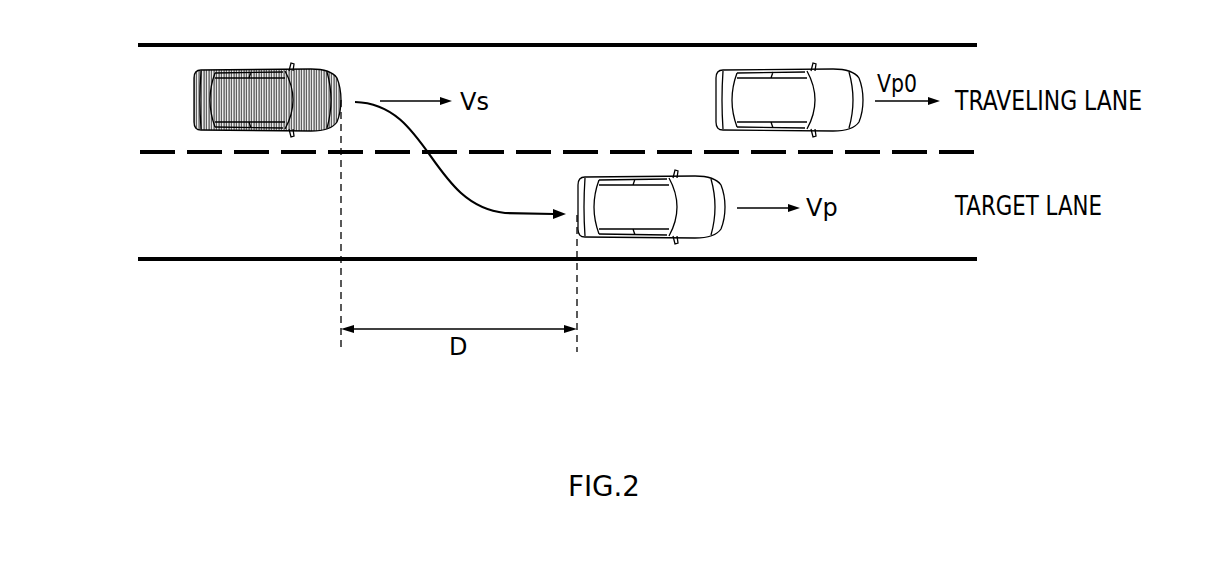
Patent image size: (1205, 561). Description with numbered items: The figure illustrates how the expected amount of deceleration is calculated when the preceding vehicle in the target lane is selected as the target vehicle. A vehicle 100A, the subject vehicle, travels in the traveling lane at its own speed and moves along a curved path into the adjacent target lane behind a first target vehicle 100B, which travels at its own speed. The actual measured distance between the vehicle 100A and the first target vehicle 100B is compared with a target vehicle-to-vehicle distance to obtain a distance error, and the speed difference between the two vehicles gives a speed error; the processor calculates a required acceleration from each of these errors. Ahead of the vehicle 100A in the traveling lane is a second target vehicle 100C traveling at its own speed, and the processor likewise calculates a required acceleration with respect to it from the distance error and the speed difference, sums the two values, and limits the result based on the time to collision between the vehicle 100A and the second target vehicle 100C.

The vehicle 100A is at (193, 98).
The first target vehicle 100B is at (650, 240).
The second target vehicle 100C is at (715, 98).